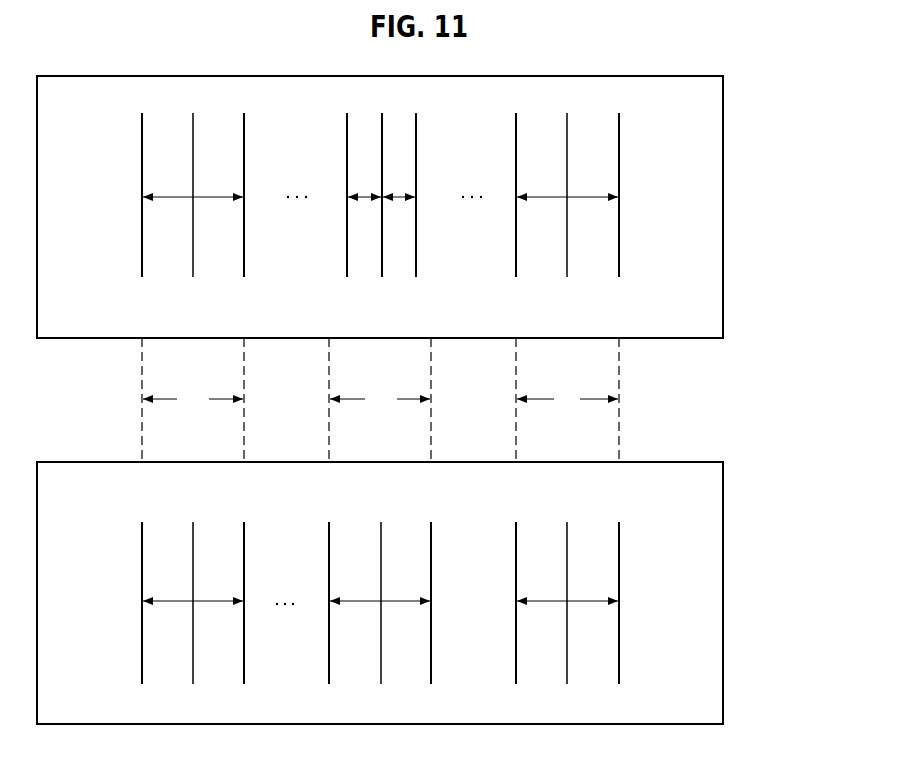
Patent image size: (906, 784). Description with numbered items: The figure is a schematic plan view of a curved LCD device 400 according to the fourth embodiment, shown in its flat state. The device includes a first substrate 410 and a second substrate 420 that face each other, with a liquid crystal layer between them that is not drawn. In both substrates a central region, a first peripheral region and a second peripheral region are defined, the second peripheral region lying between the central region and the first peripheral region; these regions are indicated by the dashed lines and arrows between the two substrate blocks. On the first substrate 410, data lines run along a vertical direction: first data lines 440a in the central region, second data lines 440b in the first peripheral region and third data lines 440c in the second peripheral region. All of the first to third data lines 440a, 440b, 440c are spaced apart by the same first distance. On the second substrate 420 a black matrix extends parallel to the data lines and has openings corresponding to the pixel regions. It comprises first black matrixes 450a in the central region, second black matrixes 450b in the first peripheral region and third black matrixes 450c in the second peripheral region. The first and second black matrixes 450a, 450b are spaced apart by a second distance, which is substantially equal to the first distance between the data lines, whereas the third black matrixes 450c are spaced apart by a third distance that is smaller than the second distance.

The curved LCD device 400 is at (113, 412).
The first substrate 410 is at (723, 527).
The second substrate 420 is at (723, 140).
The first data lines 440a is at (619, 508).
The second data lines 440b is at (142, 508).
The third data lines 440c is at (329, 508).
The first black matrixes 450a is at (619, 290).
The second black matrixes 450b is at (142, 290).
The third black matrixes 450c is at (347, 290).